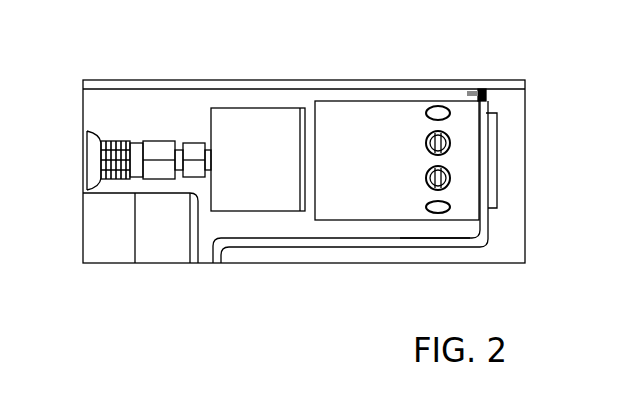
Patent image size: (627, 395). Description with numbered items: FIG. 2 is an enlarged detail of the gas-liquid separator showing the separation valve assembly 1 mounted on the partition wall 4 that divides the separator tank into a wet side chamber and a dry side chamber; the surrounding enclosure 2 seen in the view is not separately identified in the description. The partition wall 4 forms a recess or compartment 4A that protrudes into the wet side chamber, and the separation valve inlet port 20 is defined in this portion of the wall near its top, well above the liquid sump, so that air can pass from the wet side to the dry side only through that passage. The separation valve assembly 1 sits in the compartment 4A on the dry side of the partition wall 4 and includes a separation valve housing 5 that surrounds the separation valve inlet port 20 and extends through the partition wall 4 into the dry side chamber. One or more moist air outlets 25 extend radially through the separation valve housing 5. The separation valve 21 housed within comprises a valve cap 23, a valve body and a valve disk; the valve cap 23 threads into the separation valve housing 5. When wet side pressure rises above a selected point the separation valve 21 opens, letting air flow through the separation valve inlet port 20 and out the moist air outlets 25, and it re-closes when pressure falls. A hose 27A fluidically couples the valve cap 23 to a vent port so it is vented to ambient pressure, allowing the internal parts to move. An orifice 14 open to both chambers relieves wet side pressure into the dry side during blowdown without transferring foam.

The separation valve assembly 1 is at (256, 101).
The housing 2 is at (112, 247).
The partition wall 4 is at (311, 241).
The compartment 4A is at (428, 232).
The separation valve housing 5 is at (358, 117).
The orifice 14 is at (485, 95).
The separation valve inlet port 20 is at (492, 177).
The separation valve 21 is at (287, 108).
The valve cap 23 is at (274, 195).
The moist air outlets 25 is at (430, 140).
The hose 27A is at (93, 160).